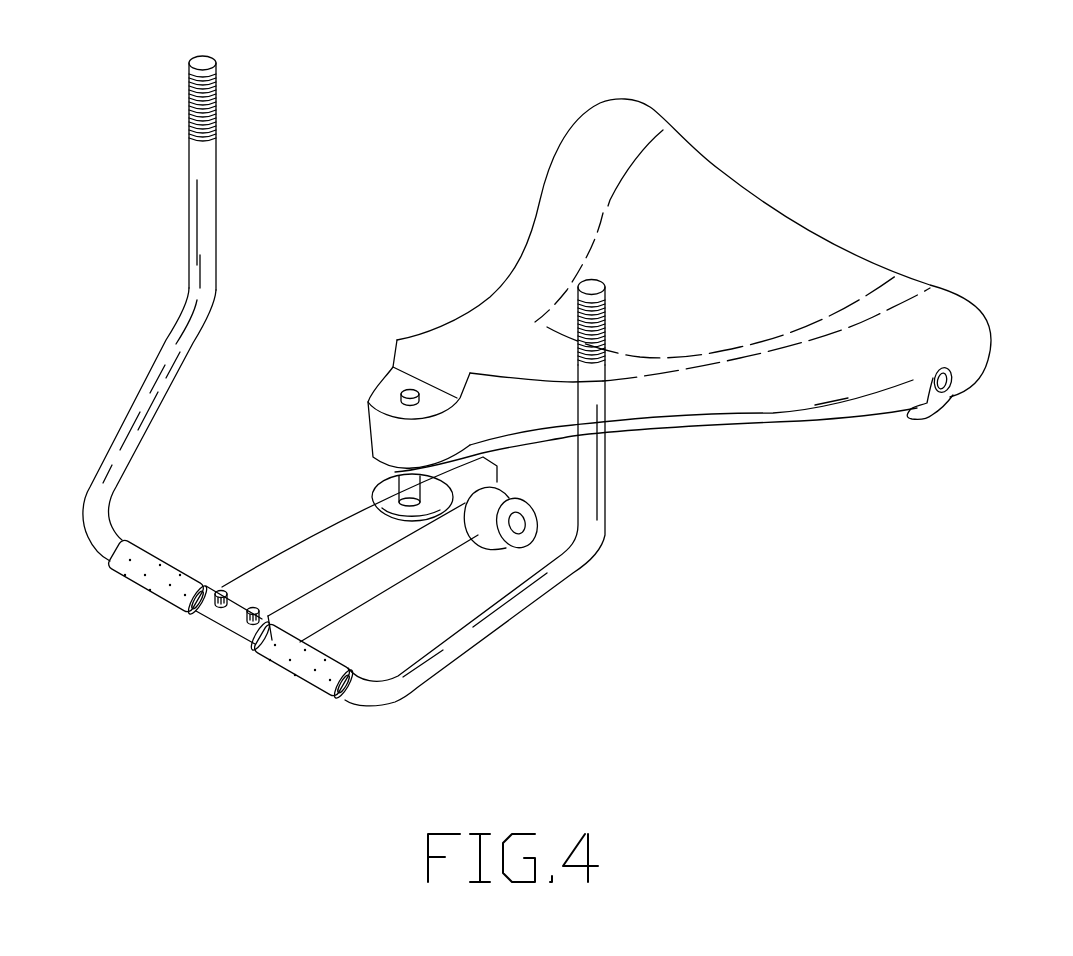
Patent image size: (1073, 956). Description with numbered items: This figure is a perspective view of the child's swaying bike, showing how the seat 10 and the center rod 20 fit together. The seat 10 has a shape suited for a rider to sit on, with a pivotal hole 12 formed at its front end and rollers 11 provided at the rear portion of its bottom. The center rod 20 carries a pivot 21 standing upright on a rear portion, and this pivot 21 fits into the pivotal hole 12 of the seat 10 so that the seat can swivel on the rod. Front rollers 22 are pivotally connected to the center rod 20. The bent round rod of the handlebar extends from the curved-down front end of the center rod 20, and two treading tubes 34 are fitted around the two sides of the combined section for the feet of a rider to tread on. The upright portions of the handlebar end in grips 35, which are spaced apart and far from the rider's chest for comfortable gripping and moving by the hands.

The seat 10 is at (805, 209).
The roller 11 is at (937, 418).
The pivotal hole 12 is at (398, 390).
The center rod 20 is at (260, 543).
The pivot 21 is at (396, 490).
The front rollers 22 is at (528, 522).
The treading tubes 34 is at (167, 558).
The grip 35 is at (217, 98).